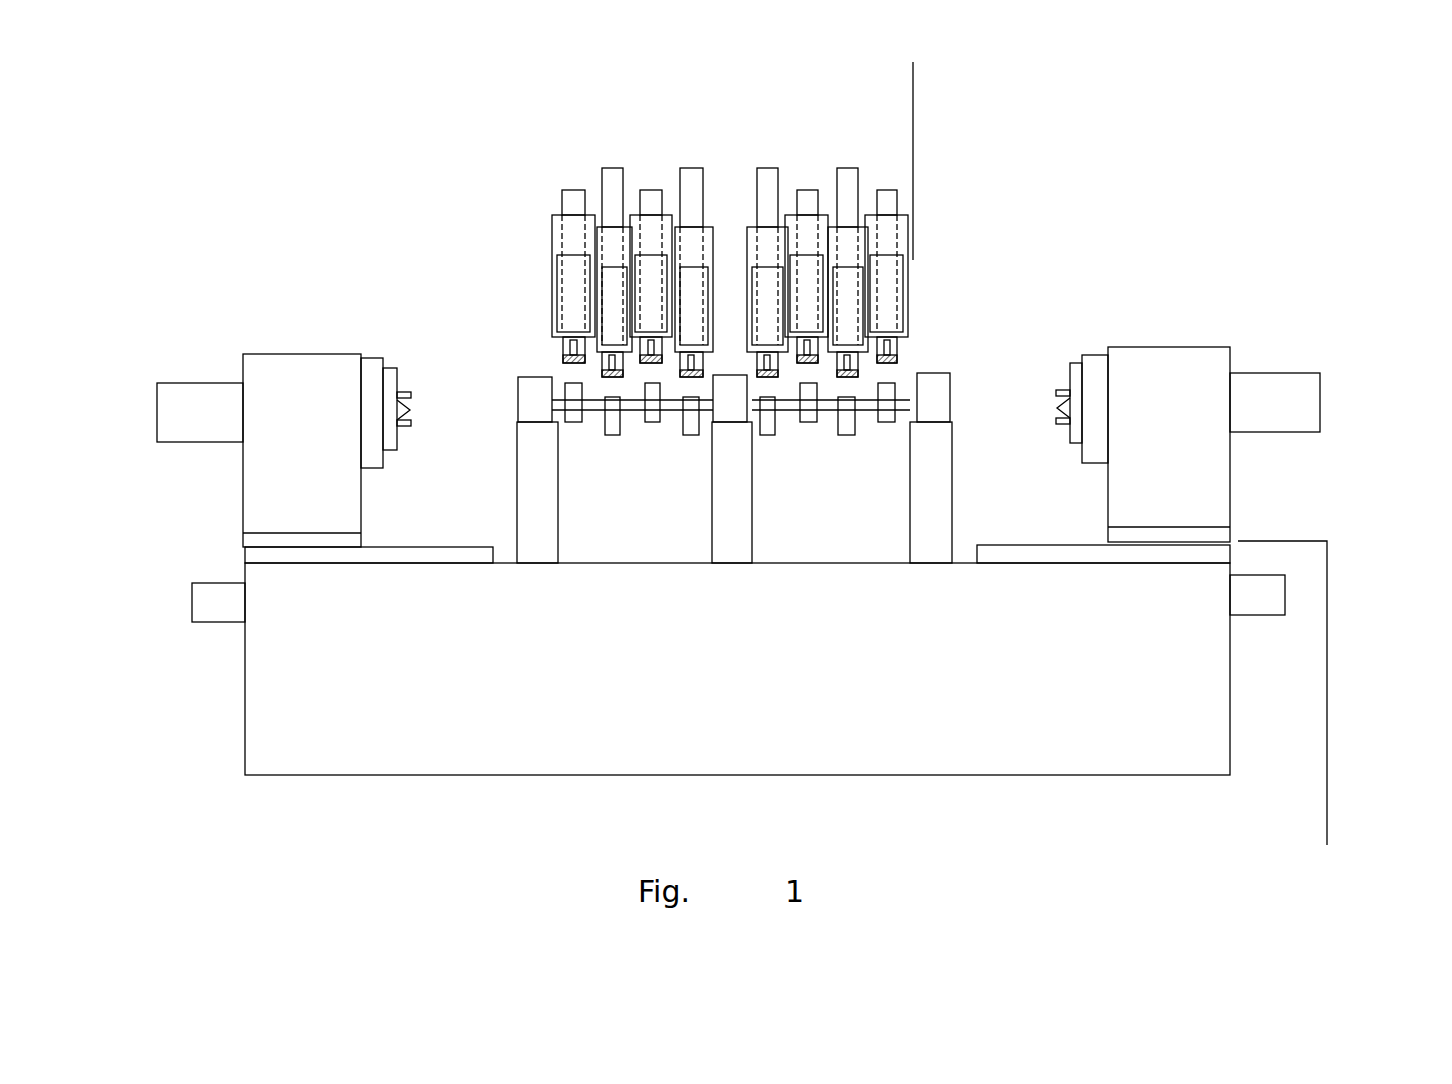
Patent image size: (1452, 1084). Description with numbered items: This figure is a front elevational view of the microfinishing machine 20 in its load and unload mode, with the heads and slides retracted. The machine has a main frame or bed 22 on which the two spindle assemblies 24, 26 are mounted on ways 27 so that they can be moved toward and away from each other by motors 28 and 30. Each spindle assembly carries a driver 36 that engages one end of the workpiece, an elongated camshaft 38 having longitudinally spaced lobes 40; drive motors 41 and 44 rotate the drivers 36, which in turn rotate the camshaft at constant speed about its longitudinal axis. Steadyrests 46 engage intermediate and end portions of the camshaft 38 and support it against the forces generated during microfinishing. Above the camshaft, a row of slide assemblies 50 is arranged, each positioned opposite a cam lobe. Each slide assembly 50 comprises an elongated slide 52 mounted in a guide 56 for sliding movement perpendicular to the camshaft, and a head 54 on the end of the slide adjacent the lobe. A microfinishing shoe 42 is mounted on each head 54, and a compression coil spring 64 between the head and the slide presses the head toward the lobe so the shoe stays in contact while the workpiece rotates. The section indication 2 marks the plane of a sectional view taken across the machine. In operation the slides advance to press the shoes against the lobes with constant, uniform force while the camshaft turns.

The section line 2- 2 is at (920, 87).
The microfinishing machine 20 is at (1058, 218).
The main machine frame or bed 22 is at (1183, 720).
The spindle assembly 24 is at (300, 390).
The spindle assembly 26 is at (1173, 385).
The ways 27 is at (432, 545).
The motor 28 is at (215, 615).
The motor 30 is at (1260, 607).
The driver 36 is at (407, 390).
The camshaft 38 is at (681, 452).
The lobes 40 is at (614, 430).
The drive motor 41 is at (203, 405).
The microfinishing shoe 42 is at (897, 358).
The drive motor 44 is at (1272, 395).
The steadyrest 46 is at (541, 540).
The slide assembly 50 is at (680, 159).
The slide 52 is at (562, 205).
The head 54 is at (567, 358).
The guide 56 is at (551, 235).
The compression coil spring 64 is at (567, 342).